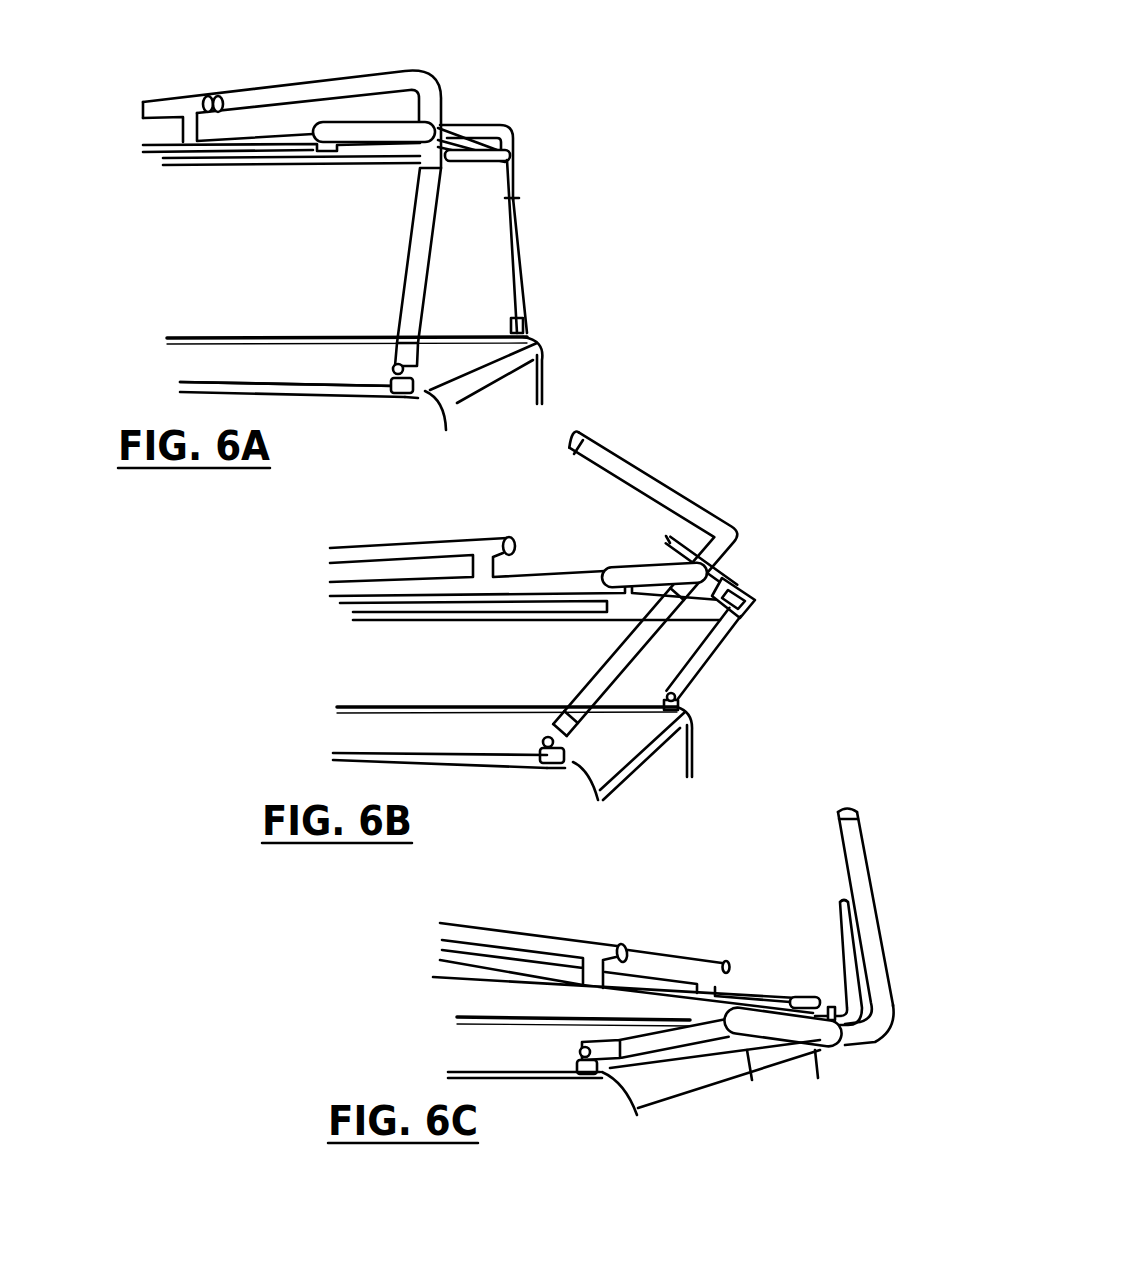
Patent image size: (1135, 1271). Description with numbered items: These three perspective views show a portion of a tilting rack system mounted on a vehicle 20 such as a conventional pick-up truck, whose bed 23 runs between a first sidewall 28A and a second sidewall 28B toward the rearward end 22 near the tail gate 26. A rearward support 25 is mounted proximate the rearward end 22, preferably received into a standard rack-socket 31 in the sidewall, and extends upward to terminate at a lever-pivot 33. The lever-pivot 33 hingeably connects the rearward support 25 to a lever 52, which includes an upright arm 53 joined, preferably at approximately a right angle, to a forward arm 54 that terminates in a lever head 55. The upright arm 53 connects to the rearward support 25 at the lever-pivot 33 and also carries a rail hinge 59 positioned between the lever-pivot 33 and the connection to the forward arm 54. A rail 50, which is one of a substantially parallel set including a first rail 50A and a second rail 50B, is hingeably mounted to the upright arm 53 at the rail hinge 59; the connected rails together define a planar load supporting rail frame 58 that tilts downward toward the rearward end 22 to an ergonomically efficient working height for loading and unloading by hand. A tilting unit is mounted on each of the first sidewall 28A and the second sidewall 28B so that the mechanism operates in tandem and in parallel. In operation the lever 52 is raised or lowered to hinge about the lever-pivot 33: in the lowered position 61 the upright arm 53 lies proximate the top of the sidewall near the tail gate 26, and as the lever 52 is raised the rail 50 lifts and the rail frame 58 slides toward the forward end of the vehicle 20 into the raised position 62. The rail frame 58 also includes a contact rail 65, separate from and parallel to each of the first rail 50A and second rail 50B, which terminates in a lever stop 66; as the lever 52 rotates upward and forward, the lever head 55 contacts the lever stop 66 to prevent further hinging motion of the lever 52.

In FIG. 6A, the vehicle 20 is at (348, 430).
In FIG. 6B, the vehicle 20 is at (551, 792).
In FIG. 6C, the vehicle 20 is at (577, 1128).
In FIG. 6A, the rearward end 22 is at (405, 430).
In FIG. 6B, the rearward end 22 is at (576, 802).
In FIG. 6C, the rearward end 22 is at (608, 1115).
In FIG. 6A, the bed 23 is at (238, 375).
In FIG. 6A, the rearward support 25 is at (392, 380).
In FIG. 6B, the rearward support 25 is at (540, 750).
In FIG. 6C, the rearward support 25 is at (578, 1063).
In FIG. 6B, the tail gate 26 is at (659, 776).
In FIG. 6C, the tail gate 26 is at (690, 1095).
In FIG. 6A, the first sidewall 28A is at (182, 383).
In FIG. 6B, the first sidewall 28A is at (345, 757).
In FIG. 6A, the second sidewall 28B is at (168, 338).
In FIG. 6B, the second sidewall 28B is at (340, 707).
In FIG. 6A, the rack-socket 31 is at (388, 385).
In FIG. 6B, the rack-socket 31 is at (542, 770).
In FIG. 6C, the rack-socket 31 is at (582, 1077).
In FIG. 6A, the lever-pivot 33 is at (396, 364).
In FIG. 6B, the lever-pivot 33 is at (546, 738).
In FIG. 6C, the lever-pivot 33 is at (580, 1050).
In FIG. 6C, the rail 50 is at (390, 978).
In FIG. 6A, the first rail 50A is at (212, 150).
In FIG. 6B, the first rail 50A is at (375, 596).
In FIG. 6A, the second rail 50B is at (305, 160).
In FIG. 6B, the second rail 50B is at (432, 622).
In FIG. 6A, the lever 52 is at (428, 185).
In FIG. 6B, the lever 52 is at (628, 656).
In FIG. 6C, the lever 52 is at (871, 1030).
In FIG. 6A, the upright arm 53 is at (420, 235).
In FIG. 6B, the upright arm 53 is at (596, 700).
In FIG. 6C, the upright arm 53 is at (702, 1048).
In FIG. 6A, the forward arm 54 is at (325, 90).
In FIG. 6B, the forward arm 54 is at (668, 500).
In FIG. 6C, the forward arm 54 is at (866, 918).
In FIG. 6A, the lever head 55 is at (222, 97).
In FIG. 6B, the lever head 55 is at (586, 437).
In FIG. 6C, the lever head 55 is at (856, 810).
In FIG. 6A, the rail frame 58 is at (117, 147).
In FIG. 6B, the rail frame 58 is at (242, 591).
In FIG. 6C, the rail frame 58 is at (378, 936).
In FIG. 6A, the rail hinge 59 is at (443, 124).
In FIG. 6B, the rail hinge 59 is at (707, 568).
In FIG. 6C, the rail hinge 59 is at (826, 1046).
In FIG. 6C, the lowered position 61 is at (768, 896).
In FIG. 6A, the raised position 62 is at (641, 166).
In FIG. 6A, the contact rail 65 is at (165, 106).
In FIG. 6B, the contact rail 65 is at (463, 548).
In FIG. 6C, the contact rail 65 is at (568, 945).
In FIG. 6A, the lever stop 66 is at (205, 97).
In FIG. 6B, the lever stop 66 is at (506, 539).
In FIG. 6C, the lever stop 66 is at (618, 945).